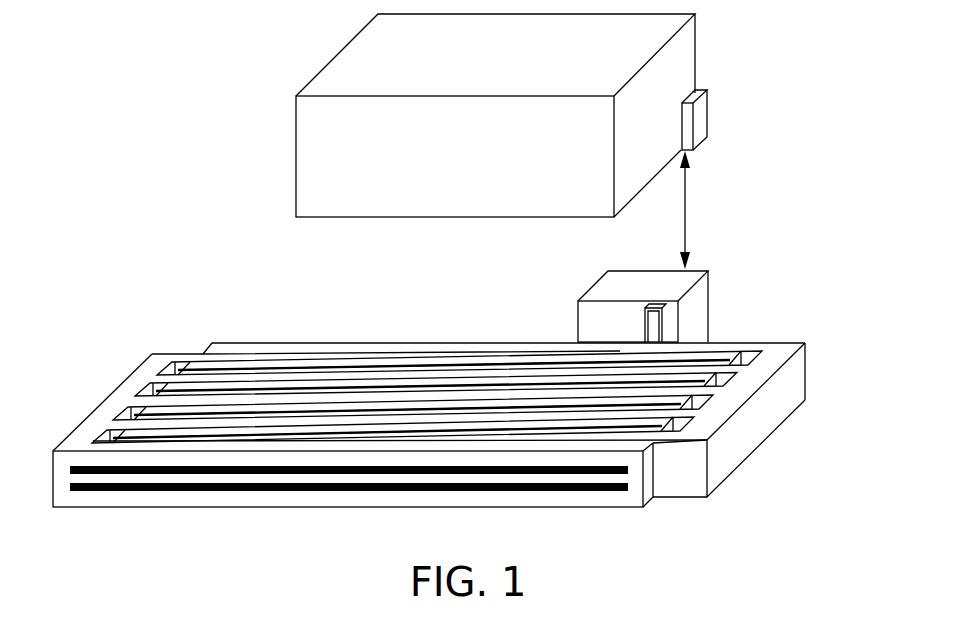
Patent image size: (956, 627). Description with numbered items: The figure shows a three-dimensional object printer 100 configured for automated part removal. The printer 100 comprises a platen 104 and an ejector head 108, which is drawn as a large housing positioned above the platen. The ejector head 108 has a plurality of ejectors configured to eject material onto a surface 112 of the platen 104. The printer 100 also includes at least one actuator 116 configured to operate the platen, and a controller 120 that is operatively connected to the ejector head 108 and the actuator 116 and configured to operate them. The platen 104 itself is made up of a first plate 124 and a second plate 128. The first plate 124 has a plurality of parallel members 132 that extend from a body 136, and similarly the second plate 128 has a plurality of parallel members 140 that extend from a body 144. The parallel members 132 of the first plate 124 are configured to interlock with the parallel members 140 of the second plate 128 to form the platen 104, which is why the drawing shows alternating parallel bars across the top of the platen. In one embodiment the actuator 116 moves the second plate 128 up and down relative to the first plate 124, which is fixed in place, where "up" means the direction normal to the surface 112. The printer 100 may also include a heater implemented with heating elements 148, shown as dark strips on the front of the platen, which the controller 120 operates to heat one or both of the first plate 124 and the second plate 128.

The three-dimensional object printer 100 is at (143, 70).
The platen 104 is at (434, 418).
The ejector head 108 is at (339, 84).
The surface 112 is at (418, 378).
The actuator 116 is at (710, 300).
The controller 120 is at (701, 112).
The first plate 124 is at (136, 351).
The second plate 128 is at (793, 333).
The parallel members 132 is at (330, 438).
The body 136 is at (99, 416).
The parallel members 140 is at (540, 437).
The body 144 is at (737, 437).
The heating elements 148 is at (148, 475).